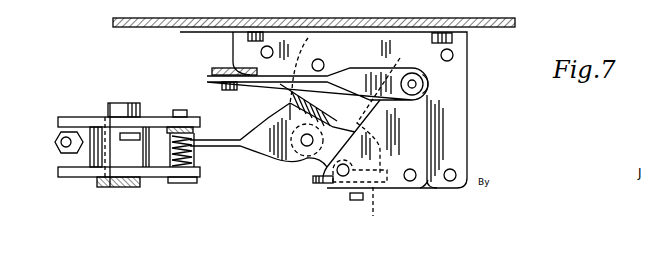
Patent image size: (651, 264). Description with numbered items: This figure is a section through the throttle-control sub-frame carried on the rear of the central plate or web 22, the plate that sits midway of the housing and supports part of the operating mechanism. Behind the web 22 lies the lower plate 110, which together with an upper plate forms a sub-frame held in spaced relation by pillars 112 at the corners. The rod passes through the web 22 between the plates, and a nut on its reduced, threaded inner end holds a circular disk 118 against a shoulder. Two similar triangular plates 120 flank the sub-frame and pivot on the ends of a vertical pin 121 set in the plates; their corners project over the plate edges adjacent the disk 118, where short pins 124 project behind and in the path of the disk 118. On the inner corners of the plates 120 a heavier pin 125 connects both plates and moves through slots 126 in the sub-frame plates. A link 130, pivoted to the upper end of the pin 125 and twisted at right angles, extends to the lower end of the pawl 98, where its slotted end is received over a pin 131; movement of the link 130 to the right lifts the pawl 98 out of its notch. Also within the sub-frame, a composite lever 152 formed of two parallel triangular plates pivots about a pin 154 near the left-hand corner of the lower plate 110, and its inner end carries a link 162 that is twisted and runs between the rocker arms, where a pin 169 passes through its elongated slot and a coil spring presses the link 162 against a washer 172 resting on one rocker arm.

The central plate or web 22 is at (480, 22).
The pawl 98 is at (216, 70).
The lower plate 110 is at (467, 124).
The pillars 112 is at (262, 50).
The circular disk 118 is at (320, 184).
The triangular plates 120 is at (430, 185).
The vertical pin 121 is at (411, 182).
The short pins 124 is at (367, 192).
The heavier pin 125 is at (420, 82).
The slots 126 is at (432, 90).
The link 130 is at (364, 62).
The pin 131 is at (228, 90).
The composite lever 152 is at (298, 108).
The pin 154 is at (318, 60).
The link 162 is at (271, 152).
The pin 169 is at (190, 179).
The washer 172 is at (192, 131).